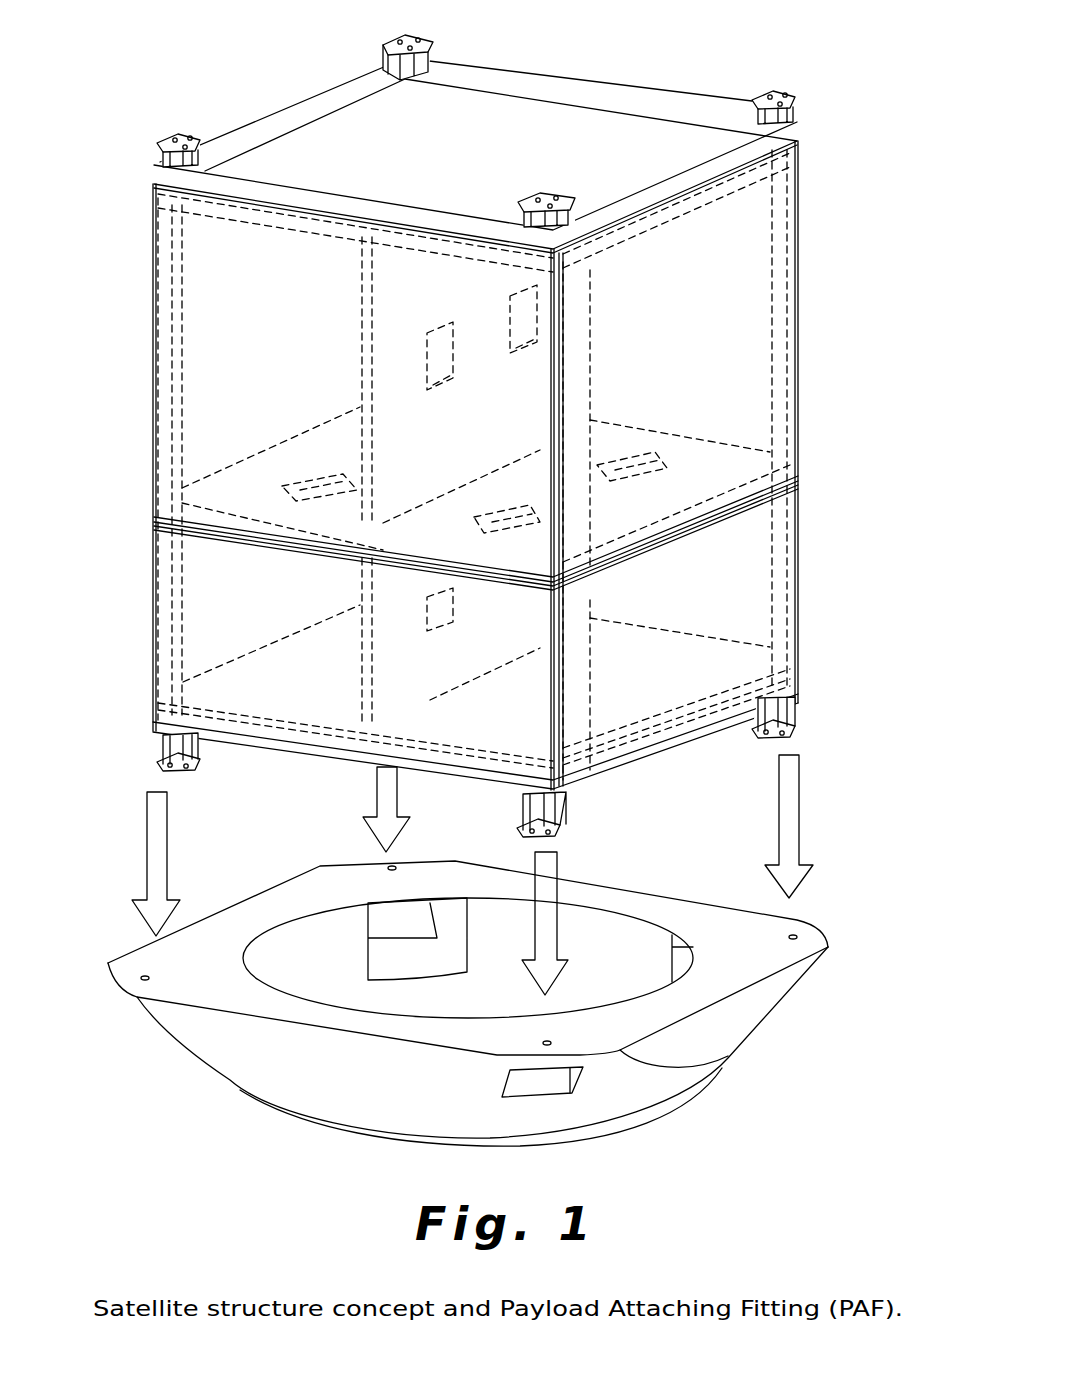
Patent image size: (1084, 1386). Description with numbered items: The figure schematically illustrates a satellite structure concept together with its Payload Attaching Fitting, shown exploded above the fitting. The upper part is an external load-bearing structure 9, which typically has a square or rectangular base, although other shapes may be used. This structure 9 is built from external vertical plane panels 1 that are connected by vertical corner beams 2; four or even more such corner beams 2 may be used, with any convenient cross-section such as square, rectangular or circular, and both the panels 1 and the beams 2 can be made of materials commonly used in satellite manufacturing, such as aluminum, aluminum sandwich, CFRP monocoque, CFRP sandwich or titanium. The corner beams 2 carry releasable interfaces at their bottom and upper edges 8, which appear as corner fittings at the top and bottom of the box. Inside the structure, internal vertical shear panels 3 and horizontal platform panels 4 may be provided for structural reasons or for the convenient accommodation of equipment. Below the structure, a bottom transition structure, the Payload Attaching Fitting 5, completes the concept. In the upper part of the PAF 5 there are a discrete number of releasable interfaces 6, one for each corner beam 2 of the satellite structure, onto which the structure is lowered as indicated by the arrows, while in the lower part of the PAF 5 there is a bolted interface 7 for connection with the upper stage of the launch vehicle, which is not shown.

The external vertical plane panels 1 is at (290, 333).
The vertical corner beams 2 is at (790, 245).
The internal vertical shear panels 3 is at (407, 317).
The horizontal platform panels 4 is at (597, 495).
The Payload Attaching Fitting (PAF) 5 is at (257, 1037).
The releasable interfaces 6 is at (800, 938).
The bolted interface 7 is at (527, 1140).
The bottom and upper edges with releasable interfaces 8 is at (162, 162).
The external load-bearing structure 9 is at (840, 156).